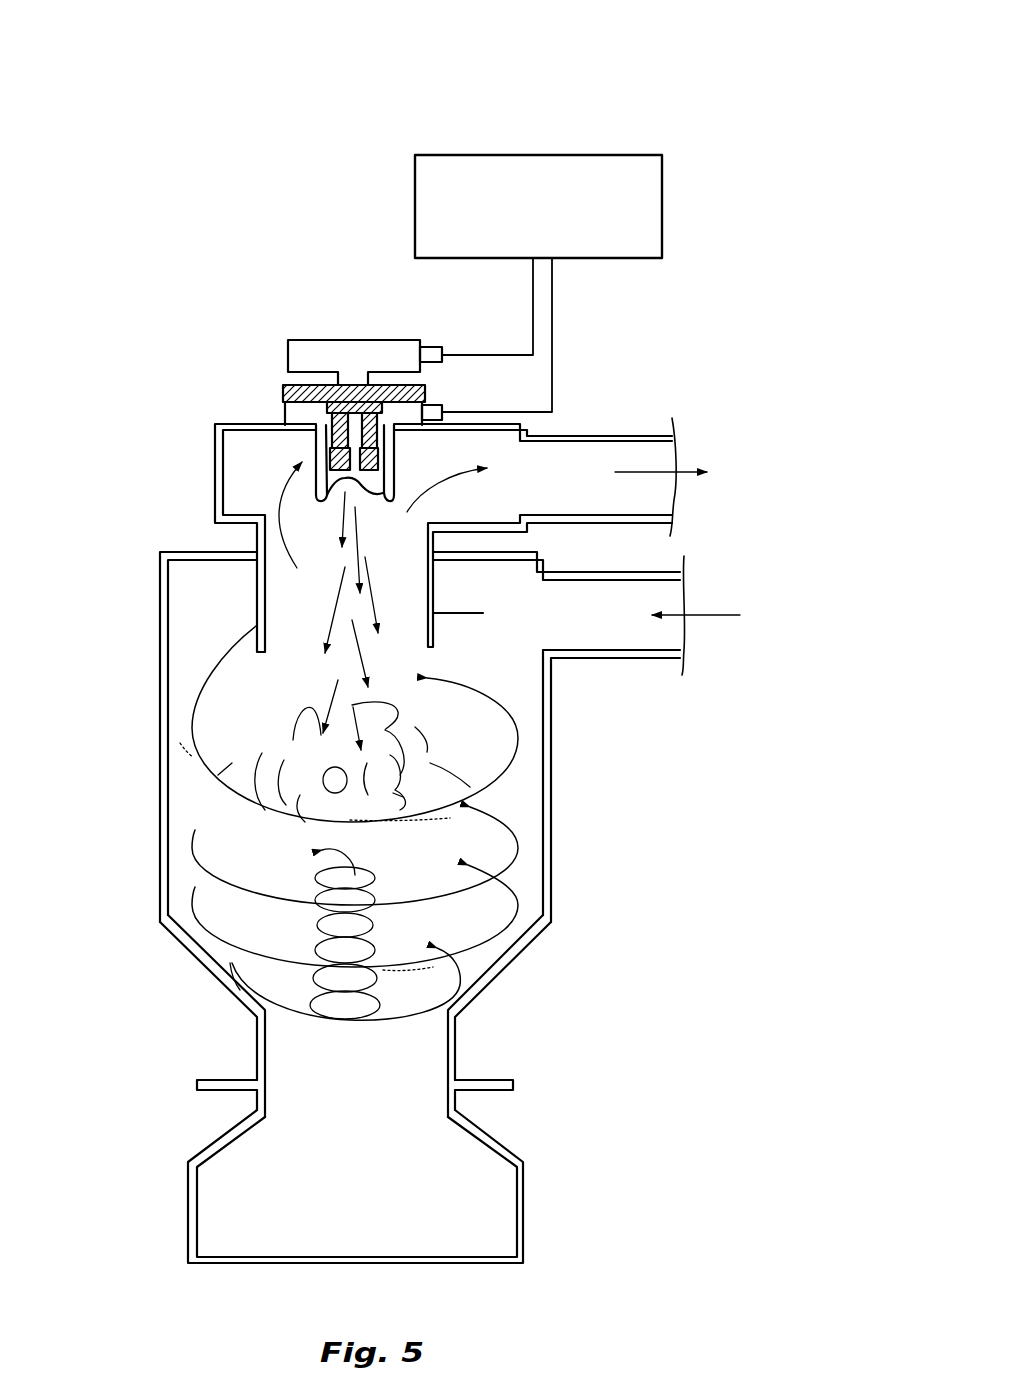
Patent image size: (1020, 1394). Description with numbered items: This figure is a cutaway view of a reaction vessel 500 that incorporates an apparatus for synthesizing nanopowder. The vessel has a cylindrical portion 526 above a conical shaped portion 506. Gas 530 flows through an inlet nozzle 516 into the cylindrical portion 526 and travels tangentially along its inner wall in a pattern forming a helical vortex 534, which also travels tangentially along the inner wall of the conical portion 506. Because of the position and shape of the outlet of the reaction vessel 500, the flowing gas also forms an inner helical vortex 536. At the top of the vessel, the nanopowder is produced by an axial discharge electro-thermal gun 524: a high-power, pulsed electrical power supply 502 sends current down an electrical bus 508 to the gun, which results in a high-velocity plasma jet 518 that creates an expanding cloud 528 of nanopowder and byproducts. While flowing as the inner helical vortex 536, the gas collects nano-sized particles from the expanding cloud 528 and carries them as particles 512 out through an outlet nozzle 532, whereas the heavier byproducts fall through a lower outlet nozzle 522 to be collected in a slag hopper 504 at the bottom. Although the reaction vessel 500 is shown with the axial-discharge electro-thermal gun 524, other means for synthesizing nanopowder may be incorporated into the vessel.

The reaction vessel 500 is at (475, 97).
The high-power pulsed electrical power supply 502 is at (662, 212).
The slag hopper 504 is at (525, 1243).
The conical shaped portion 506 is at (492, 978).
The electrical bus 508 is at (552, 322).
The carried particles 512 is at (684, 476).
The inlet nozzle 516 is at (653, 658).
The high-velocity plasma jet 518 is at (333, 605).
The outlet nozzle 522 is at (232, 1078).
The axial discharge electro-thermal gun 524 is at (261, 384).
The cylindrical portion 526 is at (160, 804).
The expanding cloud 528 is at (465, 738).
The gas 530 is at (745, 607).
The outlet nozzle 532 is at (650, 437).
The helical vortex 534 is at (193, 718).
The inner helical vortex 536 is at (390, 935).